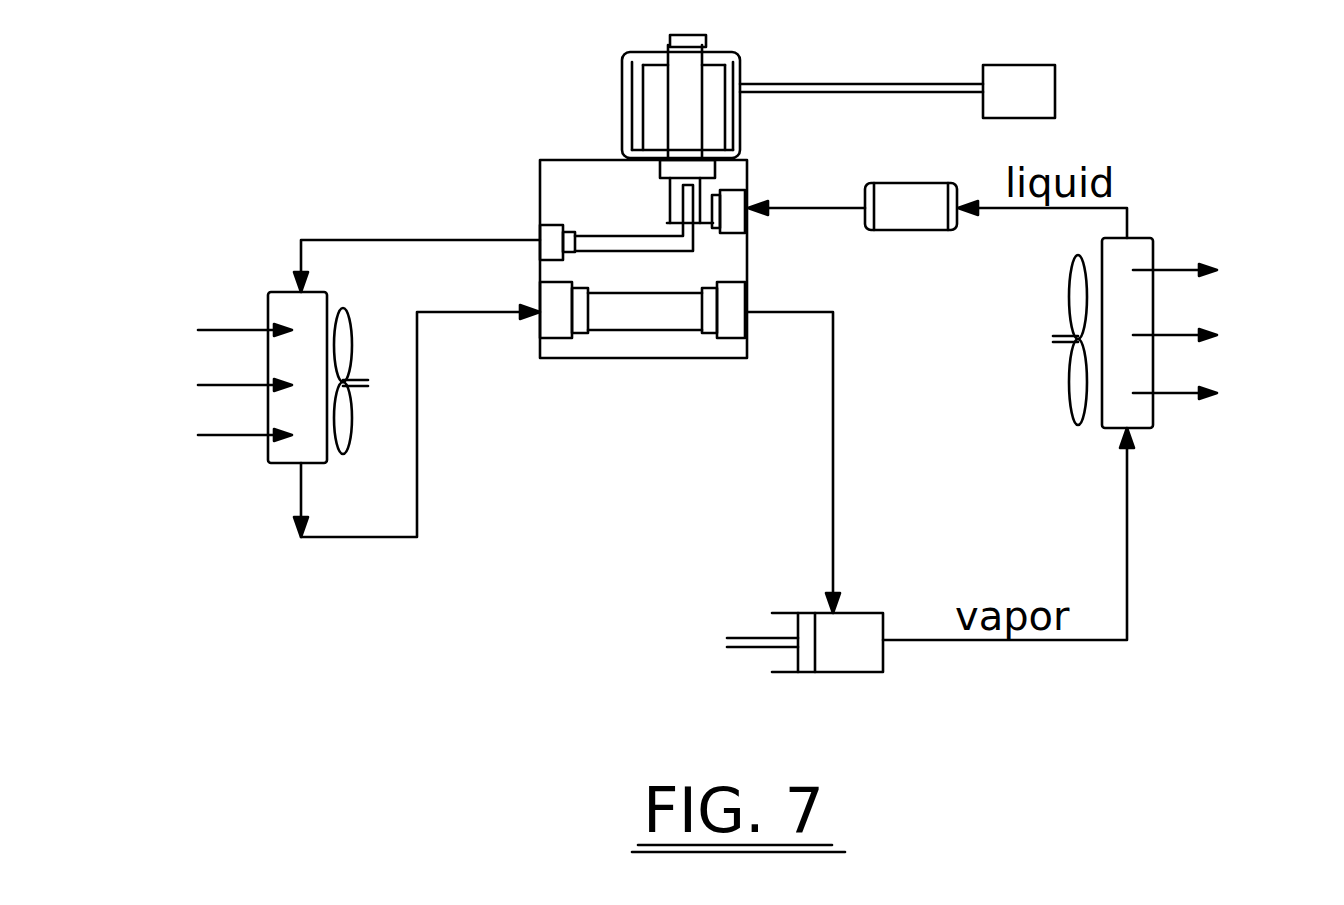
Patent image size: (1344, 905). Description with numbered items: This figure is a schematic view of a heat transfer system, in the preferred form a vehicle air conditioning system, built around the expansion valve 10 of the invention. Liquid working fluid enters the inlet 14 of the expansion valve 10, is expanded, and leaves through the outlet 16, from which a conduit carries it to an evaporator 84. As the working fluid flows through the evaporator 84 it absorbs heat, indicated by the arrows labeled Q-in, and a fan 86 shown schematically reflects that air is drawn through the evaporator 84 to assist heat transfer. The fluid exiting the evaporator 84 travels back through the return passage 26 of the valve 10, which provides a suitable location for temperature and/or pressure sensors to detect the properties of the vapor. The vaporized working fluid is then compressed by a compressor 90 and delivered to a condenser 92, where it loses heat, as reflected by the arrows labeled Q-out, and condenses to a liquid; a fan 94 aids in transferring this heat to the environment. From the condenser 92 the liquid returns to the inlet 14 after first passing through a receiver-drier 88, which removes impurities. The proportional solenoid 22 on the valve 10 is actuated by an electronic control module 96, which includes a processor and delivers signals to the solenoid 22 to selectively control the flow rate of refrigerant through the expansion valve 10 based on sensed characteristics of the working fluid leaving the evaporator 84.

The expansion valve 10 is at (573, 368).
The inlet 14 is at (748, 192).
The outlet 16 is at (538, 237).
The proportional solenoid 22 is at (732, 114).
The return passage 26 is at (657, 330).
The evaporator 84 is at (268, 310).
The fan 86 is at (350, 313).
The receiver-drier 88 is at (900, 230).
The compressor 90 is at (848, 672).
The condenser 92 is at (1155, 420).
The fan 94 is at (1075, 388).
The electronic control module 96 is at (1020, 65).